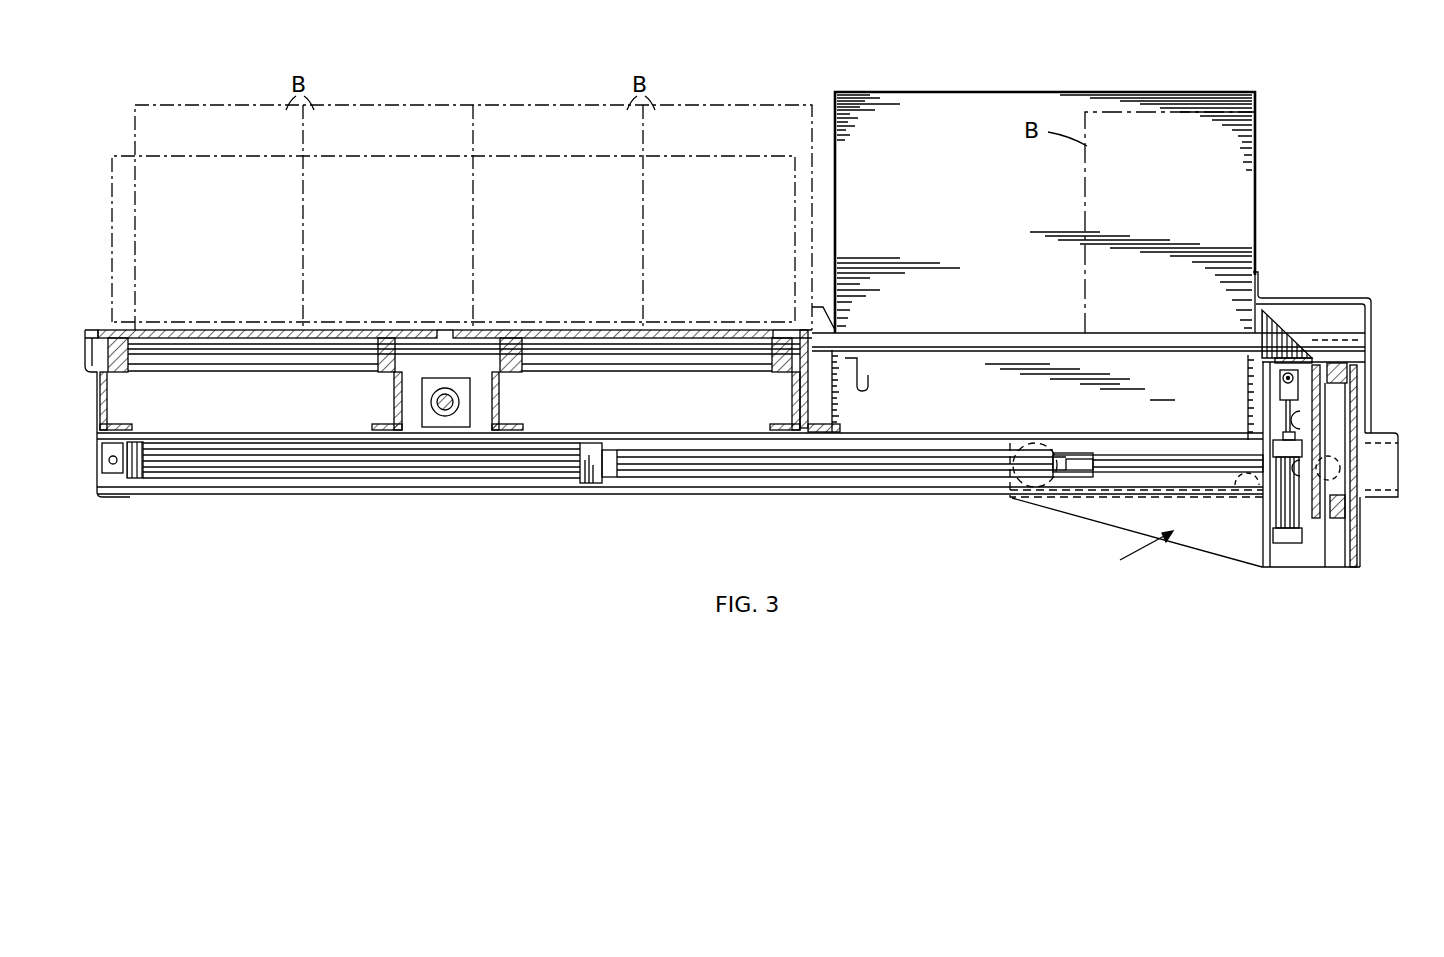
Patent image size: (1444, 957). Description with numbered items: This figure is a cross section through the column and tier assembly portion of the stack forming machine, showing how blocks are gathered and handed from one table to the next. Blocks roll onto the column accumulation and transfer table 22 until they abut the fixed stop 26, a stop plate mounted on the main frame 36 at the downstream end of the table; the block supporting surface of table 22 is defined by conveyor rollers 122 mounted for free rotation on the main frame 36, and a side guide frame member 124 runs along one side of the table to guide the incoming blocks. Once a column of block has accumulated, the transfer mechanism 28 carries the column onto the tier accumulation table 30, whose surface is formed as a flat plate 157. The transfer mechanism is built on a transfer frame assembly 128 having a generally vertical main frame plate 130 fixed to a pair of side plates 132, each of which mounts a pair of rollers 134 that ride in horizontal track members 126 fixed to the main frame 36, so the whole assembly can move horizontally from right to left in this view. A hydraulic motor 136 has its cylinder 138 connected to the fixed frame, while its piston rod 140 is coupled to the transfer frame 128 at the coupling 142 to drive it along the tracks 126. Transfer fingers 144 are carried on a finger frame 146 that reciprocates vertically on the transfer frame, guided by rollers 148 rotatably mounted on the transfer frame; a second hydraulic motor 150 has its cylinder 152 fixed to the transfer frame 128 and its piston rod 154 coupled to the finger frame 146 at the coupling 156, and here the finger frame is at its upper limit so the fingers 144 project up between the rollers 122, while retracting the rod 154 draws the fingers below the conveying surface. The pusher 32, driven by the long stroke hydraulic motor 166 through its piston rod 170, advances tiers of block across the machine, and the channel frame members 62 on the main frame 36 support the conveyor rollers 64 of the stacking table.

The column accumulation and transfer table 22 is at (1036, 326).
The fixed stop 26 is at (966, 211).
The transfer mechanism 28 is at (1342, 320).
The tier accumulation table 30 is at (570, 327).
The pusher 32 is at (440, 155).
The main frame 36 is at (826, 416).
The channel frame members 62 is at (107, 402).
The conveyor rollers 64 is at (643, 352).
The conveyor rollers 122 is at (1140, 338).
The side guide frame member 124 is at (1262, 292).
The horizontal track members 126 is at (688, 484).
The transfer frame assembly 128 is at (1133, 559).
The main frame plate 130 is at (1362, 517).
The side plates 132 is at (1108, 512).
The rollers 134 is at (1012, 478).
The hydraulic motor 136 is at (545, 474).
The cylinder 138 is at (268, 465).
The piston rod 140 is at (847, 468).
The coupling 142 is at (1098, 447).
The transfer fingers 144 is at (1282, 322).
The finger frame 146 is at (1348, 378).
The rollers 148 is at (1322, 428).
The hydraulic motor 150 is at (1280, 500).
The cylinder 152 is at (1272, 540).
The piston rod 154 is at (1288, 407).
The coupling 156 is at (1280, 380).
The flat plate 157 is at (343, 330).
The hydraulic motor 166 is at (412, 394).
The piston rod 170 is at (490, 394).